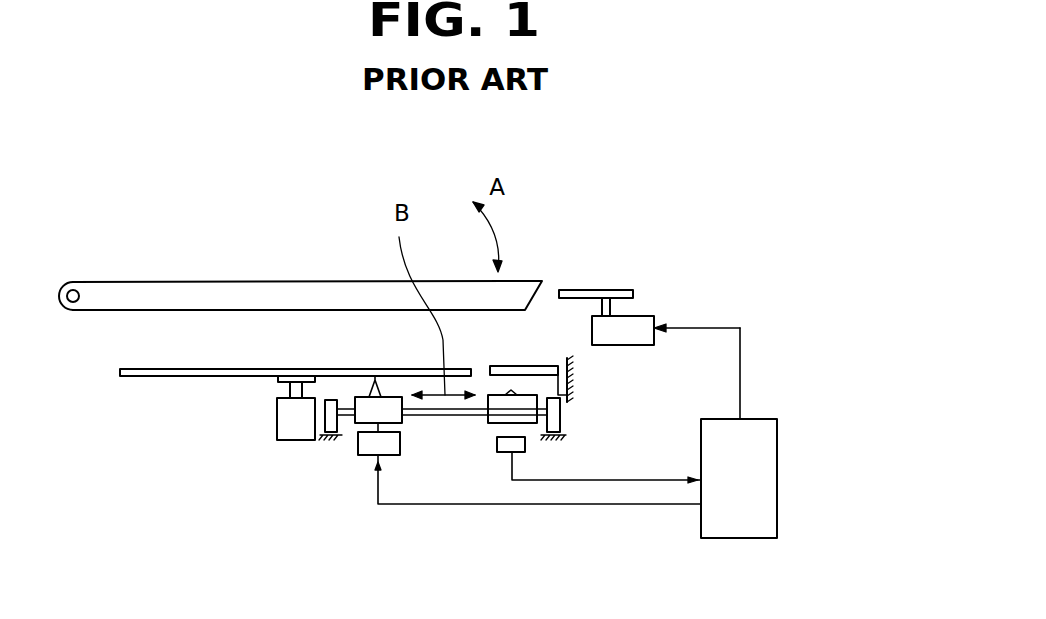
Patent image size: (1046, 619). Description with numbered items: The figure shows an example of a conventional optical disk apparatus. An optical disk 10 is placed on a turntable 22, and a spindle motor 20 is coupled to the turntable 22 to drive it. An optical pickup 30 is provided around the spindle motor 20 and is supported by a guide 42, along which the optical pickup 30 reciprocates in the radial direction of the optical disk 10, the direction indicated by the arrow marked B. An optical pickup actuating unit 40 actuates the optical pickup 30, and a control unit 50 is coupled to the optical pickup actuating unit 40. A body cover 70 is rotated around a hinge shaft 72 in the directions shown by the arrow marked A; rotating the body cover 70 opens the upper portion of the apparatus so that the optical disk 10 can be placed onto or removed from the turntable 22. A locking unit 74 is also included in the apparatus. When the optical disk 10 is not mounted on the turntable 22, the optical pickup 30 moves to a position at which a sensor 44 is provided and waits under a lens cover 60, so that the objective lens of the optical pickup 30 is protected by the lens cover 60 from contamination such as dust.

The optical disk 10 is at (145, 376).
The spindle motor 20 is at (293, 430).
The turntable 22 is at (277, 380).
The optical pickup 30 is at (392, 418).
The optical pickup actuating unit 40 is at (357, 452).
The guide 42 is at (462, 410).
The sensor 44 is at (525, 444).
The control unit 50 is at (762, 467).
The lens cover 60 is at (535, 366).
The body cover 70 is at (285, 291).
The hinge shaft 72 is at (75, 290).
The locking unit 74 is at (623, 290).